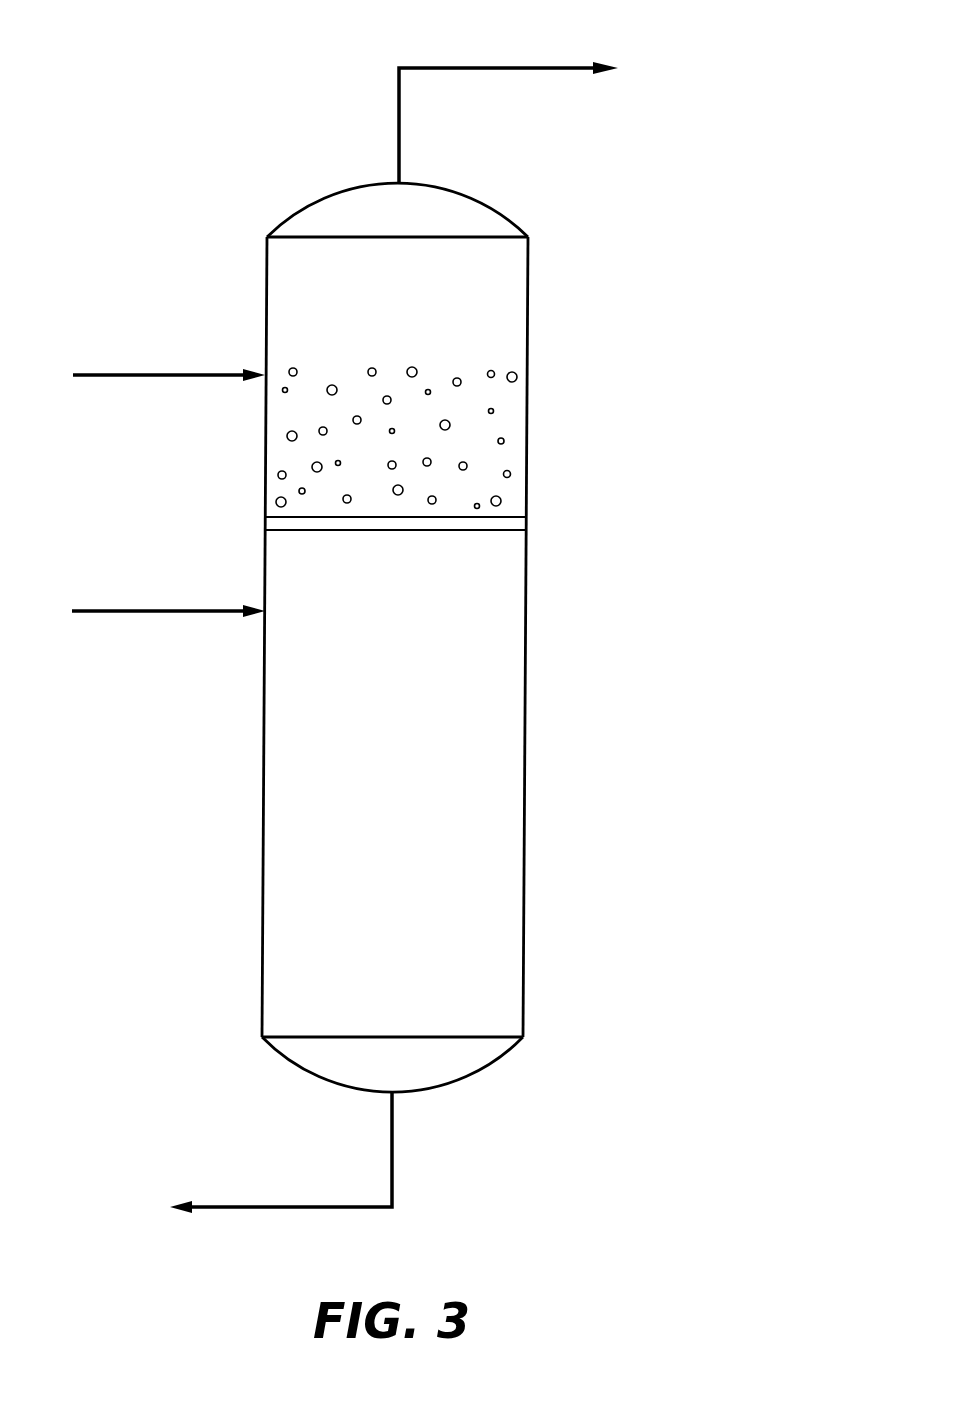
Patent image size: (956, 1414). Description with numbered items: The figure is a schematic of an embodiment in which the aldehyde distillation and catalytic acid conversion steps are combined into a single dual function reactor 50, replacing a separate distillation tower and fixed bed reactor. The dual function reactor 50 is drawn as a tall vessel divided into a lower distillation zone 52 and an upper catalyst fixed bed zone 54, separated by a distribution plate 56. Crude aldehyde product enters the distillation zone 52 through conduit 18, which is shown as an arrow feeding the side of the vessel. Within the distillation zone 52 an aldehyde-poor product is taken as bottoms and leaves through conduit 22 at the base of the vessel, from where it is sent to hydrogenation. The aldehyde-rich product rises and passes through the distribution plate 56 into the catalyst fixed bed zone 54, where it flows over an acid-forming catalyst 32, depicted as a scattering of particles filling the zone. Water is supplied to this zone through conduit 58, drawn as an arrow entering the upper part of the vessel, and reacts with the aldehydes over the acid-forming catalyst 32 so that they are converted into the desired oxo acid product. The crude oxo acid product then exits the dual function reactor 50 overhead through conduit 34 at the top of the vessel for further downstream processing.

The dual function reactor 50 is at (578, 763).
The distillation zone 52 is at (407, 722).
The catalyst fixed bed zone 54 is at (408, 306).
The distribution plate 56 is at (526, 523).
The acid-forming catalyst 32 is at (504, 441).
The conduit 34 is at (497, 66).
The conduit 58 is at (185, 374).
The conduit 18 is at (182, 610).
The conduit 22 is at (298, 1206).